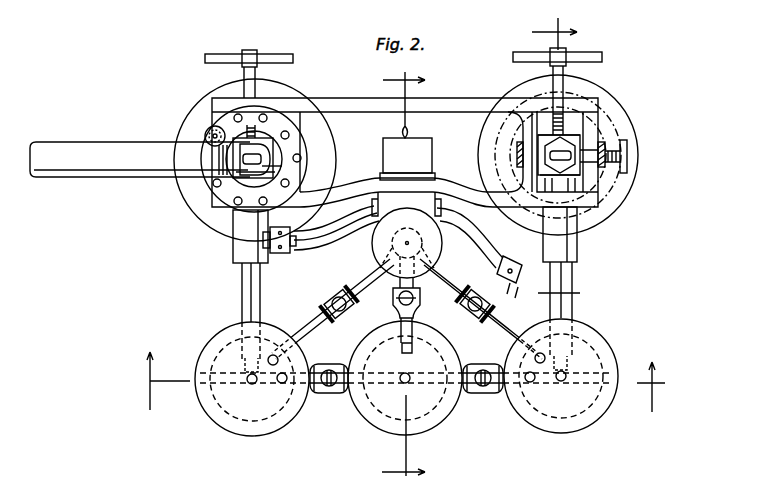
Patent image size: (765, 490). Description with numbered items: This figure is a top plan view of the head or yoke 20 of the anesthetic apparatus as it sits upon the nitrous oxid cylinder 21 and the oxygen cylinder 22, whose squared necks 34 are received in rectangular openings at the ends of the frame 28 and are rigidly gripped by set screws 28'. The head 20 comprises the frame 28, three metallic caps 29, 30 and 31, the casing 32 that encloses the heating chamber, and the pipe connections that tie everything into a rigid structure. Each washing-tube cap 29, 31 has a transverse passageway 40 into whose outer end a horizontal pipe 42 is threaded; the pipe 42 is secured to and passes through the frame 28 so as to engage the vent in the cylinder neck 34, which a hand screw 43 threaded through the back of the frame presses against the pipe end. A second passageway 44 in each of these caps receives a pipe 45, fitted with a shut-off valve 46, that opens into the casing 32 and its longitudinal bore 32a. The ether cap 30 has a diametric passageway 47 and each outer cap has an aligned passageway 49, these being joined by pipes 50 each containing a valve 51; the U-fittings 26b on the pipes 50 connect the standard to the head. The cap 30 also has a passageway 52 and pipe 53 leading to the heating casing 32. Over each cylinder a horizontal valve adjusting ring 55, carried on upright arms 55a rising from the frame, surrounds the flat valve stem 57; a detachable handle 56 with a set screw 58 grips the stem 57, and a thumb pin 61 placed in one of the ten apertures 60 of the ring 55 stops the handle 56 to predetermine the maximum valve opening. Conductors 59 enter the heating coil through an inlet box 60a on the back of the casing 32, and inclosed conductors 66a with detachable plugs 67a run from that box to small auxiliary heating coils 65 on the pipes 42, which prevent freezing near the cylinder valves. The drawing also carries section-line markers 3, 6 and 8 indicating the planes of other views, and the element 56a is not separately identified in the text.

The head or yoke 20 is at (405, 152).
The nitrous oxid cylinder 21 is at (200, 102).
The oxygen cylinder 22 is at (603, 120).
The U-fittings 26b is at (345, 395).
The frame 28 is at (478, 81).
The set screws 28' is at (645, 156).
The cap 29 is at (243, 425).
The cap 30 is at (432, 410).
The cap 31 is at (585, 420).
The casing 32 is at (371, 240).
The bore or chamber 32a is at (397, 230).
The squared necks 34 is at (240, 135).
The passageway 40 is at (245, 366).
The horizontal pipe 42 is at (242, 300).
The hand screw 43 is at (256, 70).
The passageway 44 is at (408, 309).
The pipe 45 is at (409, 346).
The shut-off valves 46 is at (403, 298).
The diametric passageway 47 is at (380, 398).
The passageway 49 is at (285, 386).
The pipes 50 is at (340, 394).
The valve 51 is at (366, 292).
The passageway 52 is at (415, 338).
The pipe 53 is at (390, 315).
The valve adjusting ring 55 is at (283, 107).
The upright arms 55a is at (518, 152).
The detachable handle 56 is at (108, 150).
The pin 56a is at (600, 152).
The flat valve stem 57 is at (265, 158).
The set screw 58 is at (278, 170).
The conductors 59 is at (421, 125).
The apertures 60 is at (252, 176).
The inlet box 60a is at (407, 159).
The thumb pin 61 is at (205, 132).
The auxiliary heating coils 65 is at (233, 248).
The inclosed conductors 66a is at (398, 239).
The detachable plugs 67a is at (402, 262).
The section line 3 is at (412, 278).
The section line 6 is at (406, 382).
The section line 8 is at (563, 155).